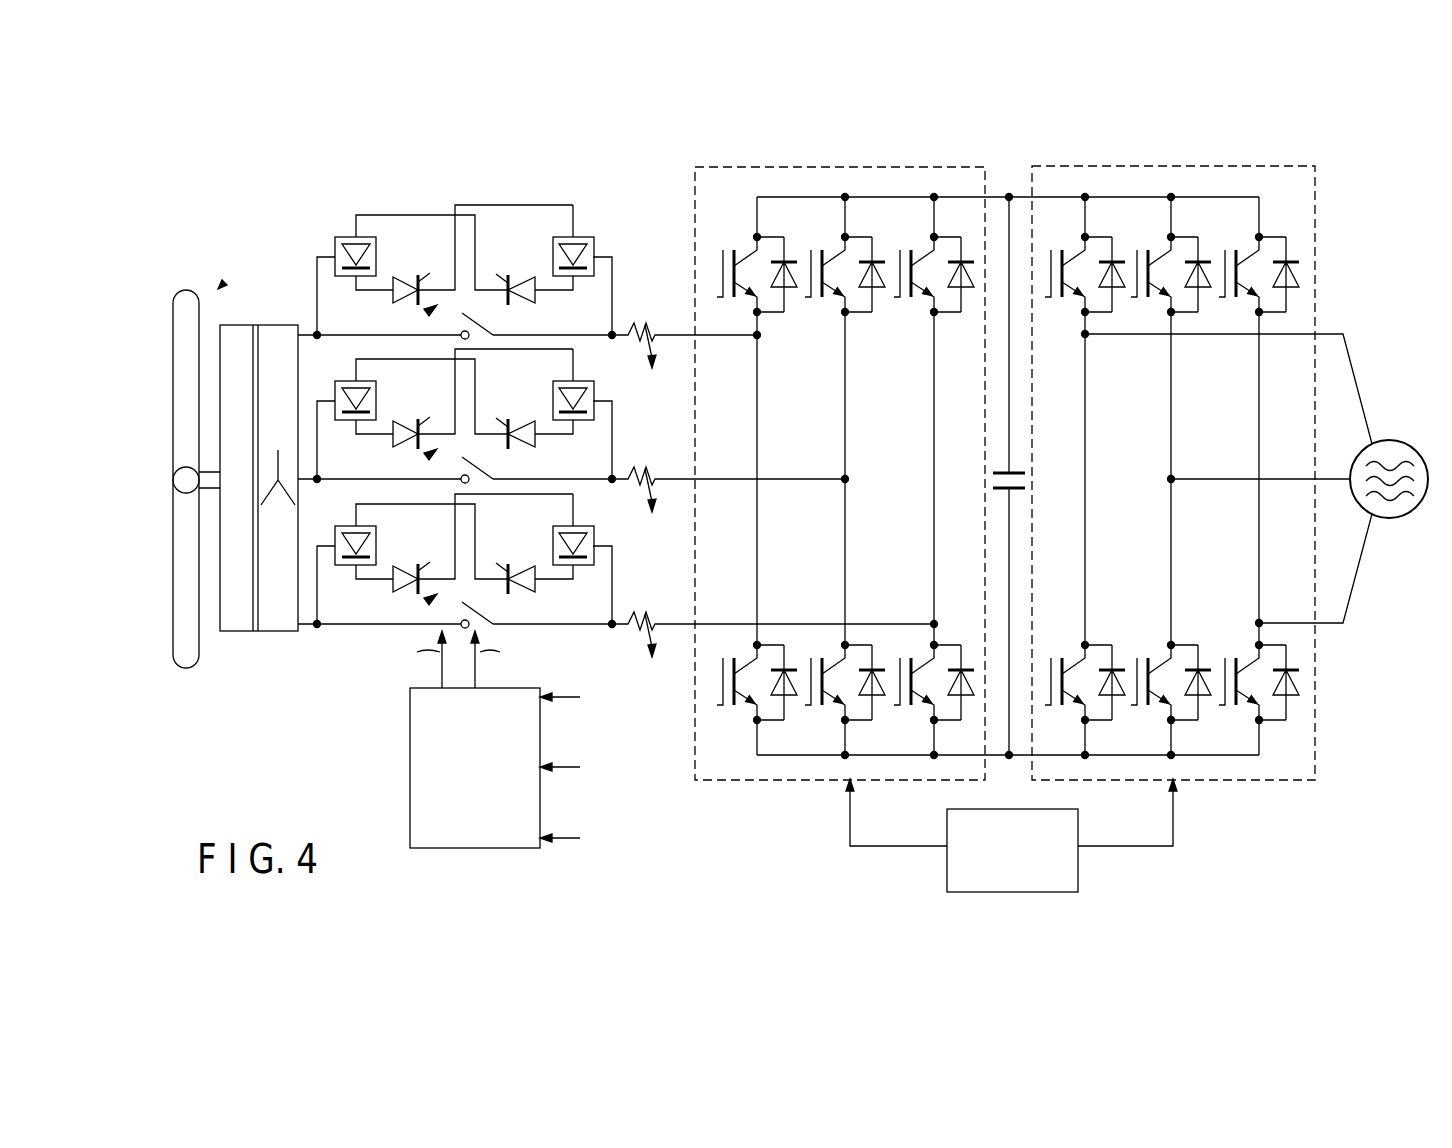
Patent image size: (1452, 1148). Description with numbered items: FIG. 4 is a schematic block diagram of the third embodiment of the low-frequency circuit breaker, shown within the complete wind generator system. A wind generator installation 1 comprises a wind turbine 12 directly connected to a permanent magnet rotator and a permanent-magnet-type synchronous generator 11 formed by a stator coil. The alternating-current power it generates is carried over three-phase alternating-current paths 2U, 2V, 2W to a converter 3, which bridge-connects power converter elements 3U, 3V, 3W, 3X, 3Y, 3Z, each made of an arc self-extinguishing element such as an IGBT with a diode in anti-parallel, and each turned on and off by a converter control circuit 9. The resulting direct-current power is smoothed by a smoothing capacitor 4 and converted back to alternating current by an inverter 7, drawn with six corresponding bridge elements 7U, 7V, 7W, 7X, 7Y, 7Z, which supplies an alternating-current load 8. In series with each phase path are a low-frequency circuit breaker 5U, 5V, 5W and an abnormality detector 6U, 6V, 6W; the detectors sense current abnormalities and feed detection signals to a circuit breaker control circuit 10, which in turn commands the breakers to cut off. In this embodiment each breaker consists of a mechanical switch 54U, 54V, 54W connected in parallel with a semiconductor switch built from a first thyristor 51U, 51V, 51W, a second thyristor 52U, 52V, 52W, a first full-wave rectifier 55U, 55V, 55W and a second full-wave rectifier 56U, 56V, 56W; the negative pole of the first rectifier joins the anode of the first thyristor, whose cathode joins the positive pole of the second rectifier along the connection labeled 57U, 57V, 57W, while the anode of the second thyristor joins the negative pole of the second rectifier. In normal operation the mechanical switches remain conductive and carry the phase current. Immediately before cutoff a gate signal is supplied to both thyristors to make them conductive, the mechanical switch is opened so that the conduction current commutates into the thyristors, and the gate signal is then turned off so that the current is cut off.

The wind generator installation 1 is at (224, 283).
The permanent-magnet-type synchronous generator 11 is at (258, 325).
The wind turbine 12 is at (180, 290).
The alternating-current path 2U is at (343, 333).
The alternating-current path 2V is at (457, 461).
The alternating-current path 2W is at (457, 606).
The converter 3 is at (826, 160).
The power converter element 3U is at (767, 236).
The power converter element 3V is at (857, 236).
The power converter element 3W is at (941, 236).
The power converter element 3X is at (770, 724).
The power converter element 3Y is at (859, 724).
The power converter element 3Z is at (943, 724).
The smoothing capacitor 4 is at (1012, 470).
The low-frequency circuit breaker 5U is at (424, 311).
The low-frequency circuit breaker 5V is at (405, 464).
The low-frequency circuit breaker 5W is at (405, 609).
The abnormality detector 6U is at (642, 322).
The abnormality detector 6V is at (728, 468).
The abnormality detector 6W is at (773, 613).
The inverter 7 is at (1170, 160).
The U-phase upper switching element 7U is at (1091, 236).
The V-phase upper switching element 7V is at (1180, 236).
The W-phase upper switching element 7W is at (1263, 236).
The U-phase lower switching element 7X is at (1097, 724).
The V-phase lower switching element 7Y is at (1184, 724).
The W-phase lower switching element 7Z is at (1267, 724).
The alternating-current load 8 is at (1388, 440).
The converter control circuit 9 is at (1021, 809).
The circuit breaker control circuit 10 is at (410, 712).
The first thyristor 51U is at (418, 277).
The first thyristor 51V is at (483, 399).
The first thyristor 51W is at (483, 544).
The second thyristor 52U is at (508, 276).
The second thyristor 52V is at (534, 417).
The second thyristor 52W is at (534, 562).
The mechanical switch 54U is at (496, 328).
The mechanical switch 54V is at (509, 468).
The mechanical switch 54W is at (512, 613).
The first full-wave rectifier 55U is at (378, 249).
The first full-wave rectifier 55V is at (412, 419).
The first full-wave rectifier 55W is at (412, 564).
The second full-wave rectifier 56U is at (581, 278).
The second full-wave rectifier 56V is at (582, 430).
The second full-wave rectifier 56W is at (583, 575).
The U-phase bypass line 57U is at (574, 222).
The V-phase bypass line 57V is at (604, 365).
The W-phase bypass line 57W is at (607, 510).